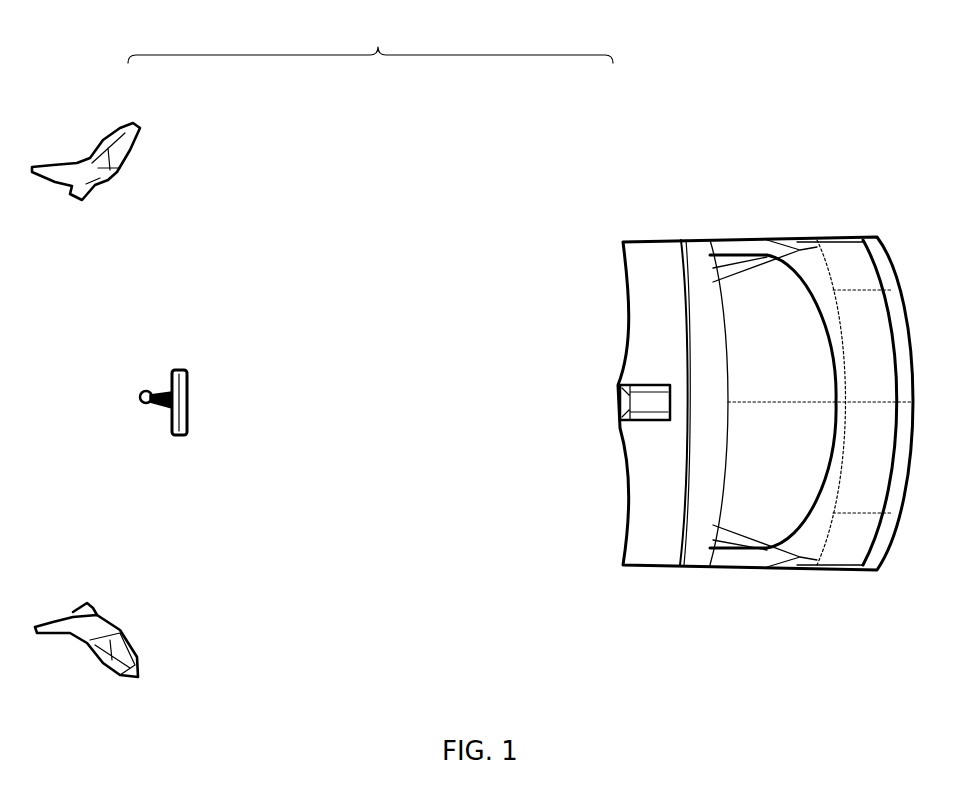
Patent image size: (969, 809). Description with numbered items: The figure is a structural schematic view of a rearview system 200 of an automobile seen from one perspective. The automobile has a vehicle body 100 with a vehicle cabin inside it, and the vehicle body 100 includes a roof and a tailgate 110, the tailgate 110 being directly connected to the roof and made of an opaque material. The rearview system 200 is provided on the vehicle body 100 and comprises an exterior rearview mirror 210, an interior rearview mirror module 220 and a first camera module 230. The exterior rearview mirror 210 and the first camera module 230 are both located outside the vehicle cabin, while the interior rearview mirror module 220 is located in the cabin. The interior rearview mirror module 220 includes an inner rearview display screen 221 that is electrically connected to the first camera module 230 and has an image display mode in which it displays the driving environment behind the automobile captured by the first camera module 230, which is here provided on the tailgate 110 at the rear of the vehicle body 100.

The vehicle body 100 is at (765, 460).
The tailgate 110 is at (710, 566).
The rearview system 200 is at (370, 40).
The exterior rearview mirror 210 is at (141, 127).
The interior rearview mirror module 220 is at (261, 249).
The inner rearview display screen 221 is at (163, 393).
The first camera module 230 is at (620, 392).